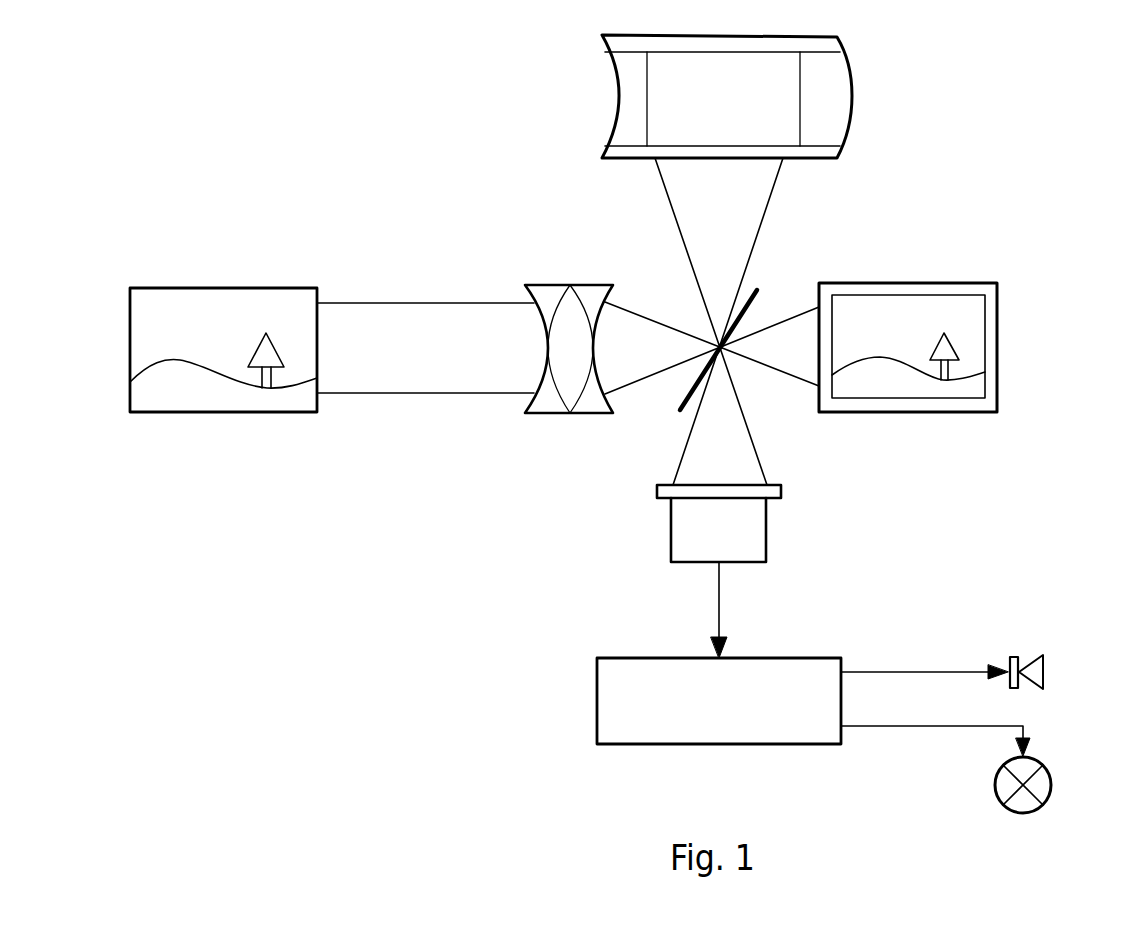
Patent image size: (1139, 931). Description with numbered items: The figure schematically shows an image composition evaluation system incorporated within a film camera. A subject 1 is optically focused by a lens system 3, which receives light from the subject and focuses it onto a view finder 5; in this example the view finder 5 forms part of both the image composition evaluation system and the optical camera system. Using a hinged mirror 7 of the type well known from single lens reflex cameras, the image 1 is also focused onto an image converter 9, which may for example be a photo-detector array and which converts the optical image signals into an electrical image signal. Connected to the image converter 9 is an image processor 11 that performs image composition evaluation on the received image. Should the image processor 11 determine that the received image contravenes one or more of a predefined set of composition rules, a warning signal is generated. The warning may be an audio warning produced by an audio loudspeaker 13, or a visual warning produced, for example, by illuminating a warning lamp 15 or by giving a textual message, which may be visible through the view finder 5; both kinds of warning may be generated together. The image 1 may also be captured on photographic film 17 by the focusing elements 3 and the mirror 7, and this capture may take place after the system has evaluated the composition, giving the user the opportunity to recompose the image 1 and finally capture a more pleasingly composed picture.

The subject 1 is at (182, 288).
The lens system 3 is at (548, 284).
The view finder 5 is at (903, 283).
The hinged mirror 7 is at (756, 302).
The image converter 9 is at (767, 525).
The image processor 11 is at (597, 708).
The audio loudspeaker 13 is at (1020, 658).
The warning lamp 15 is at (1050, 775).
The photographic film 17 is at (853, 87).